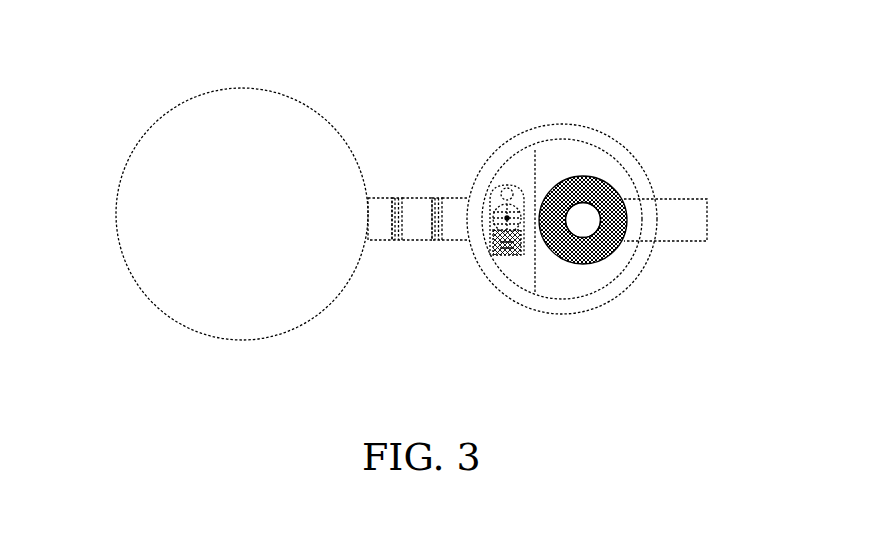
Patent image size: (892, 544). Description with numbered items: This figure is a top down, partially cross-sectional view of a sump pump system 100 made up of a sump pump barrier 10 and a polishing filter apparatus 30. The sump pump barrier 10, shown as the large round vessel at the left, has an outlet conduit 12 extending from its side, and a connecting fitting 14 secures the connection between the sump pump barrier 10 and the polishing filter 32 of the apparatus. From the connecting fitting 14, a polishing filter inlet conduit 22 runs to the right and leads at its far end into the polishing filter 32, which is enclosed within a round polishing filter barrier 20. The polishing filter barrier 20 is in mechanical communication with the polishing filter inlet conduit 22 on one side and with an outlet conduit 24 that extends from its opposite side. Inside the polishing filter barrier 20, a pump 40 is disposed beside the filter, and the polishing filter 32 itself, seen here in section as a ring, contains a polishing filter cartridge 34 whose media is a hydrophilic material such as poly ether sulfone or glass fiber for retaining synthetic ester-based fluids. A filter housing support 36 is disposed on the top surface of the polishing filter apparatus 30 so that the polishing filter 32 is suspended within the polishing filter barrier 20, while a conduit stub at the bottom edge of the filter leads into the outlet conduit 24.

The sump pump system 100 is at (150, 50).
The sump pump barrier 10 is at (325, 310).
The outlet conduit 12 is at (381, 196).
The connecting fitting 14 is at (417, 195).
The polishing filter inlet conduit 22 is at (455, 196).
The polishing filter barrier 20 is at (647, 265).
The outlet conduit 24 is at (678, 192).
The polishing filter apparatus 30 is at (610, 95).
The polishing filter 32 is at (611, 175).
The polishing filter cartridge 34 is at (598, 243).
The filter housing support 36 is at (538, 158).
The pump 40 is at (496, 253).